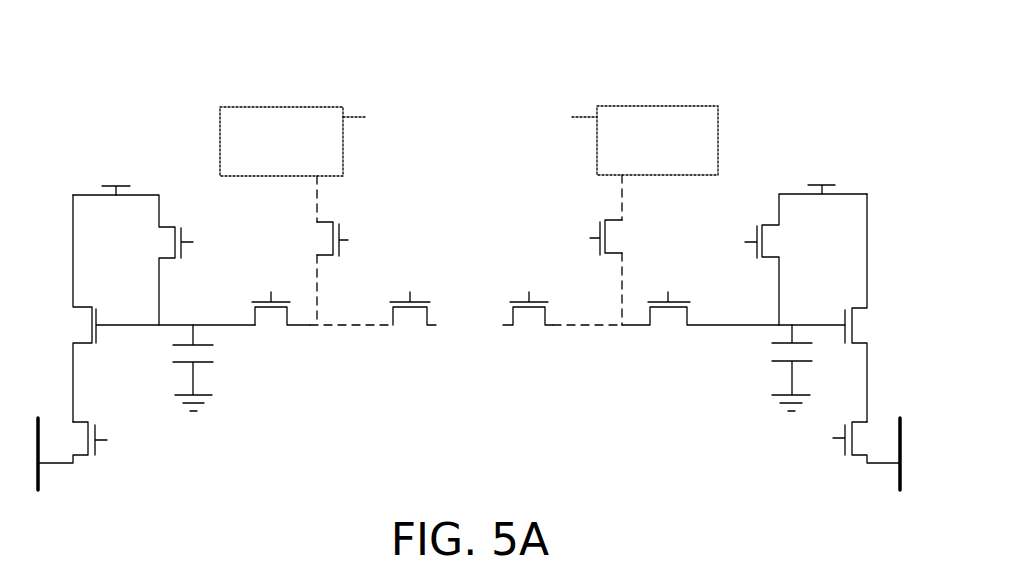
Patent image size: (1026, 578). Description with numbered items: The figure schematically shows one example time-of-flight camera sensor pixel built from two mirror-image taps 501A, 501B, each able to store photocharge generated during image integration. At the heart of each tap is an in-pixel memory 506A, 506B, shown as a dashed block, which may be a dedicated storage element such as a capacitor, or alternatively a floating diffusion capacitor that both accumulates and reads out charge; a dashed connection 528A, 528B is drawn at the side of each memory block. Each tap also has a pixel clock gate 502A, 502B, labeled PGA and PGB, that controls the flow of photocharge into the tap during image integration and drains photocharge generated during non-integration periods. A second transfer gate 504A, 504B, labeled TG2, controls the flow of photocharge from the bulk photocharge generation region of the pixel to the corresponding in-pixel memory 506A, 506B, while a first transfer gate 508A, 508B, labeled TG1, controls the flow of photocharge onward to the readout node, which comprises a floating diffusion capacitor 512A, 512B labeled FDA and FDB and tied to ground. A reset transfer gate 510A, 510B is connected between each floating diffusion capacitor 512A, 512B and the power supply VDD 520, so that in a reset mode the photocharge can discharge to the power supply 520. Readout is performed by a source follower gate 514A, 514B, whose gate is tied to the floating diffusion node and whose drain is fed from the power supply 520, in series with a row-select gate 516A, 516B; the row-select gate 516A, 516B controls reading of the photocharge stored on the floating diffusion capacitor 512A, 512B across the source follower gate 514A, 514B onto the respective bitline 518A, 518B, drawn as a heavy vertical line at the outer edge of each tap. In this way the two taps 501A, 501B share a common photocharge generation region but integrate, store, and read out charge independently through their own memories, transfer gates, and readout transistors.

The tap 501A is at (476, 58).
The tap 501B is at (934, 58).
The pixel clock gate 502A is at (416, 340).
The pixel clock gate 502B is at (522, 340).
The second transfer gate 504A is at (324, 222).
The second transfer gate 504B is at (615, 220).
The in-pixel memory 506A is at (283, 106).
The in-pixel memory 506B is at (655, 106).
The first transfer gate 508A is at (276, 340).
The first transfer gate 508B is at (659, 340).
The reset transfer gate 510A is at (171, 226).
The reset transfer gate 510B is at (771, 225).
The floating diffusion capacitor 512A is at (182, 363).
The floating diffusion capacitor 512B is at (780, 362).
The source follower gate 514A is at (90, 308).
The source follower gate 514B is at (853, 308).
The row-select gate 516A is at (78, 458).
The row-select gate 516B is at (856, 460).
The bitline 518A is at (36, 533).
The bitline 518B is at (911, 531).
The power supply VDD 520 is at (116, 146).
The memory control line of in-pixel memory A 528A is at (378, 116).
The memory control line of in-pixel memory B 528B is at (560, 116).